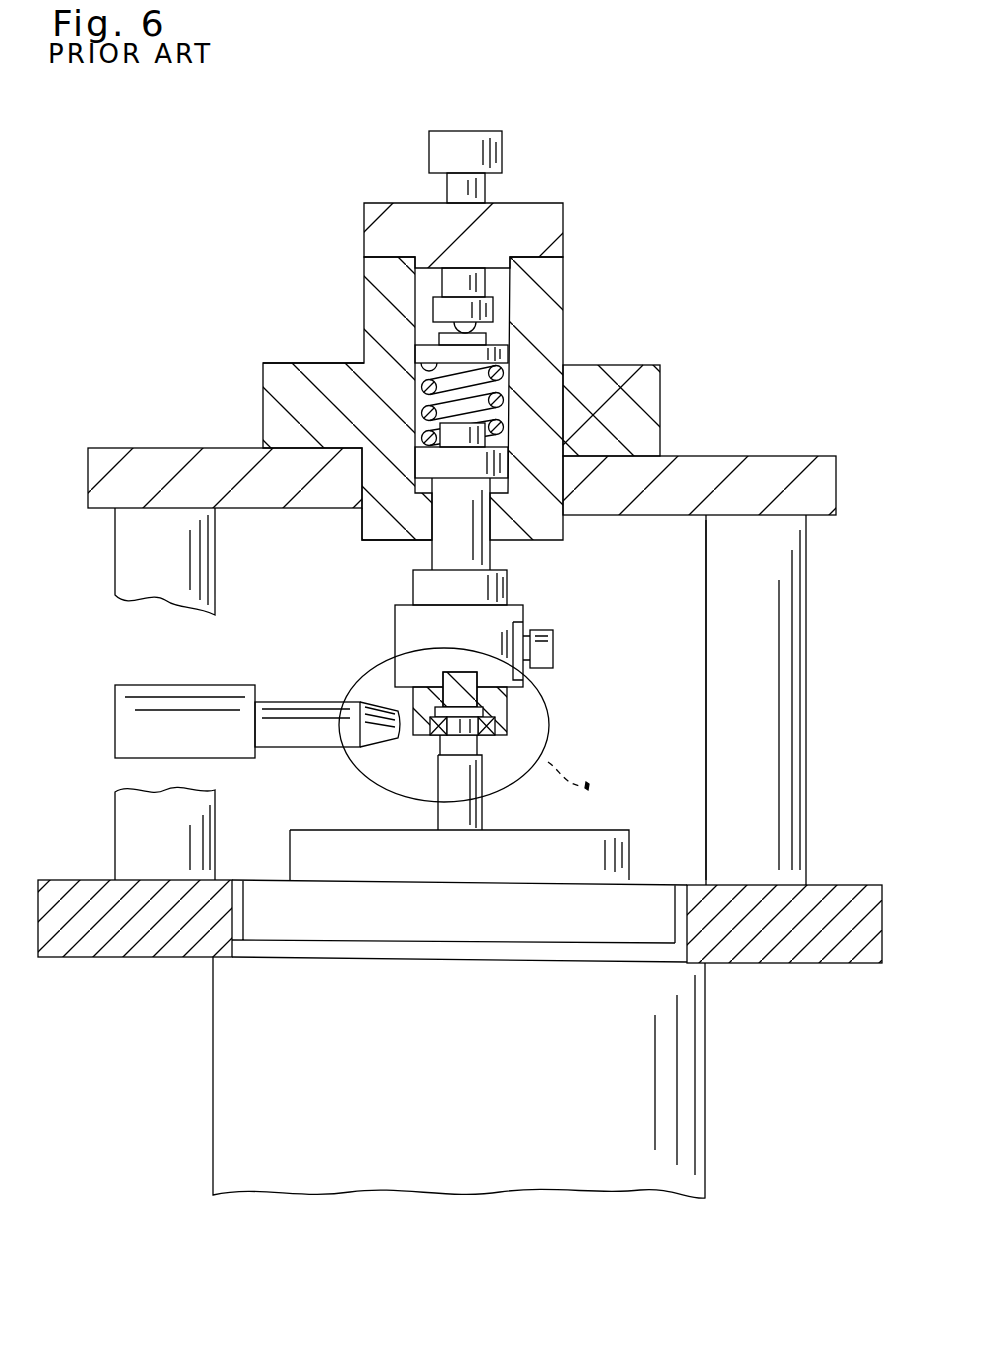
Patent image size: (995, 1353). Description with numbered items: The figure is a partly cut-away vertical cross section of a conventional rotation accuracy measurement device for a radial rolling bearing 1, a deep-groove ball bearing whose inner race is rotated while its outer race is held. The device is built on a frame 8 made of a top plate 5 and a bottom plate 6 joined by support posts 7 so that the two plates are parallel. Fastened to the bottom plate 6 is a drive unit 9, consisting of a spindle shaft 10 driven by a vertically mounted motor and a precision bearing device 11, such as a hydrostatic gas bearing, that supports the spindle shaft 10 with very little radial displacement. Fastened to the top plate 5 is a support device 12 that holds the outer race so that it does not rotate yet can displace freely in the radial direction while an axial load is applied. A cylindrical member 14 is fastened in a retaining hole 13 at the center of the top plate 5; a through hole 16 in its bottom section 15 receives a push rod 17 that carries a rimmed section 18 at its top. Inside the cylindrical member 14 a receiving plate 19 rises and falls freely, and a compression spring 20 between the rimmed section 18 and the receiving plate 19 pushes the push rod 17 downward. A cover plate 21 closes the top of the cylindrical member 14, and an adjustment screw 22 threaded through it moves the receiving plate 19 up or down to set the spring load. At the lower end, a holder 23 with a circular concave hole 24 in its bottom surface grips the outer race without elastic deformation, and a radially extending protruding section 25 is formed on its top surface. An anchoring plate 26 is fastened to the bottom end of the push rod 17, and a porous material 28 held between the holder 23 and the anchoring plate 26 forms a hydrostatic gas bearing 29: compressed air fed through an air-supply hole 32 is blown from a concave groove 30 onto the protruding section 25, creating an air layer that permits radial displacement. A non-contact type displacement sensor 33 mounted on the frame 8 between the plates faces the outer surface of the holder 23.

The radial rolling bearing 1 is at (494, 729).
The top plate 5 is at (722, 457).
The bottom plate 6 is at (838, 882).
The support posts 7 is at (203, 528).
The frame 8 is at (810, 668).
The drive unit 9 is at (712, 1097).
The spindle shaft 10 is at (484, 826).
The precision bearing device 11 is at (683, 993).
The support device 12 is at (568, 260).
The retaining hole 13 is at (362, 470).
The cylindrical member 14 is at (372, 322).
The bottom section 15 is at (375, 537).
The through hole 16 is at (497, 514).
The push rod 17 is at (483, 550).
The rimmed section 18 is at (483, 440).
The receiving plate 19 is at (498, 347).
The compression spring 20 is at (508, 363).
The cover plate 21 is at (548, 212).
The adjustment screw 22 is at (488, 138).
The holder 23 is at (503, 714).
The circular concave hole 24 is at (438, 742).
The protruding section 25 is at (522, 674).
The anchoring plate 26 is at (497, 598).
The porous material 28 is at (517, 625).
The hydrostatic gas bearing 29 is at (390, 627).
The concave groove 30 is at (400, 654).
The air-supply hole 32 is at (548, 648).
The non-contact type displacement sensor 33 is at (207, 698).